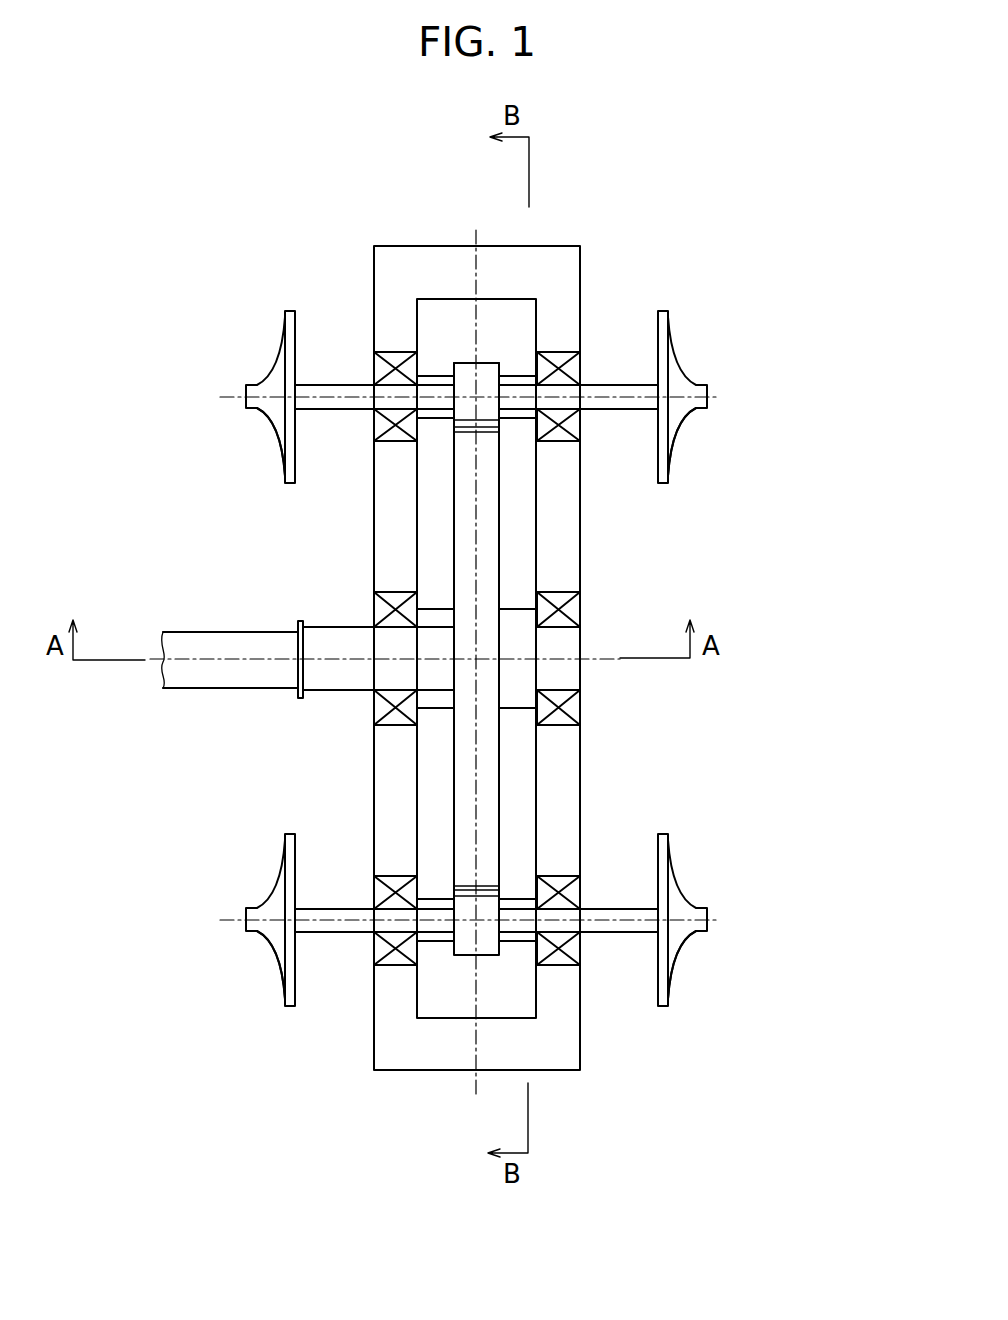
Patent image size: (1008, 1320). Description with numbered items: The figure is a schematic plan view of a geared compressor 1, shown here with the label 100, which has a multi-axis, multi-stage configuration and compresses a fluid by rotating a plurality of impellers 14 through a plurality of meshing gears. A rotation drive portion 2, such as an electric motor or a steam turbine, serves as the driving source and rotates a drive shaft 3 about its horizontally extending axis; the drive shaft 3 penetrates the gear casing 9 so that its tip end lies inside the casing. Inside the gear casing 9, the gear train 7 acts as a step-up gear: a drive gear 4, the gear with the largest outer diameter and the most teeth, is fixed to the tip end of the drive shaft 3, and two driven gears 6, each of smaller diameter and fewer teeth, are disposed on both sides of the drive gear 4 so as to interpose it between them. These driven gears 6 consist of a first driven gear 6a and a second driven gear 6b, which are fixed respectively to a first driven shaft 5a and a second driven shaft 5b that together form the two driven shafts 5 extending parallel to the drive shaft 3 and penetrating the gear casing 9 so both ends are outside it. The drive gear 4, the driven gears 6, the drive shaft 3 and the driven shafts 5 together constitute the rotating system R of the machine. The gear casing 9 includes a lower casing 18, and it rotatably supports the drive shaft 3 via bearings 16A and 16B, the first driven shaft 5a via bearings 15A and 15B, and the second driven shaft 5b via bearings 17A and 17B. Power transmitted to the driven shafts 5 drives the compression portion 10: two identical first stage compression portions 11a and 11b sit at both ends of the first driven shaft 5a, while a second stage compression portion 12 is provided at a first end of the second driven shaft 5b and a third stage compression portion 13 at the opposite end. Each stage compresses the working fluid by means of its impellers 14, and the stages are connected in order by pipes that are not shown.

The geared compressor 1 is at (678, 266).
The compressor system 100 is at (504, 614).
The rotation drive portion 2 is at (193, 689).
The drive shaft 3 is at (343, 626).
The drive gear 4 is at (500, 541).
The rotating system R is at (512, 582).
The driven shafts 5 is at (462, 663).
The first driven shaft 5a is at (340, 384).
The second driven shaft 5b is at (343, 933).
The driven gears 6 is at (576, 632).
The first driven gear 6a is at (492, 362).
The second driven gear 6b is at (488, 957).
The gear train 7 is at (470, 347).
The gear casing 9 is at (463, 598).
The lower casing 18 is at (413, 246).
The compression portion 10 is at (504, 646).
The first stage compression portion 11a is at (262, 372).
The first stage compression portion 11b is at (697, 373).
The second stage compression portion 12 is at (696, 898).
The third stage compression portion 13 is at (264, 898).
The impellers 14 is at (270, 432).
The bearing 15A is at (373, 428).
The bearing 15B is at (580, 428).
The bearing 16A is at (373, 703).
The bearing 16B is at (580, 710).
The bearing 17A is at (374, 903).
The bearing 17B is at (580, 895).